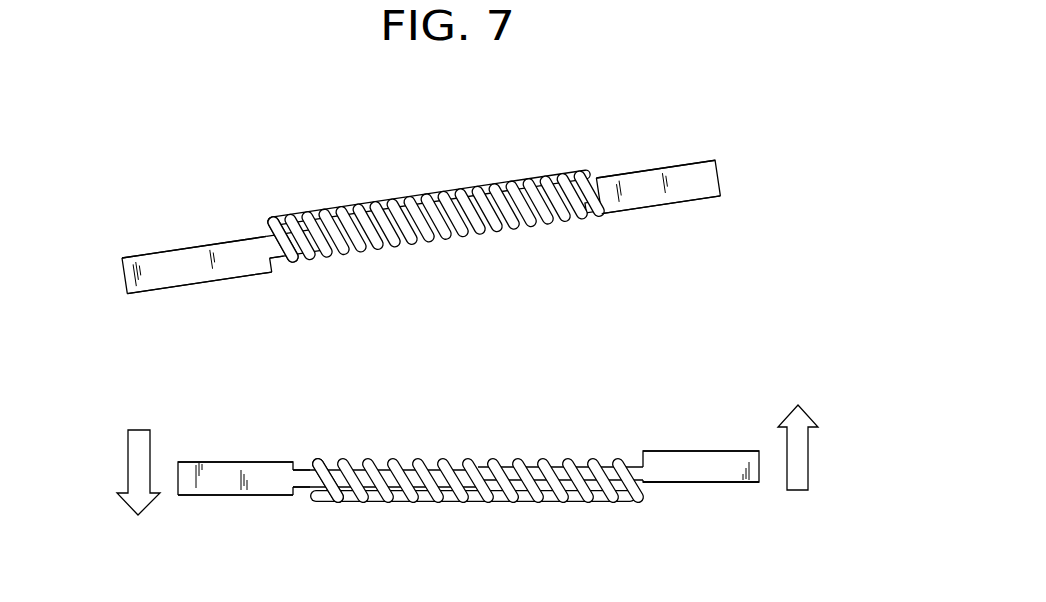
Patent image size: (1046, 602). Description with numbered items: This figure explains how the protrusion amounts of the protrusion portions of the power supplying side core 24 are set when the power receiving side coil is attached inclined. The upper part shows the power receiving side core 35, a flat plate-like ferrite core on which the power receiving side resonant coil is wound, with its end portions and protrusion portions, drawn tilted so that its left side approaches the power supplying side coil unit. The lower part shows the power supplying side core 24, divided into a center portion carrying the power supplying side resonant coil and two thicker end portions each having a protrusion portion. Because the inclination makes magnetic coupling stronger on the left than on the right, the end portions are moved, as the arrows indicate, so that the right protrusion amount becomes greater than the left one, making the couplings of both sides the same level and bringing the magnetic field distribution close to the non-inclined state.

The power supplying side core 24 is at (490, 501).
The power receiving side core 35 is at (428, 196).